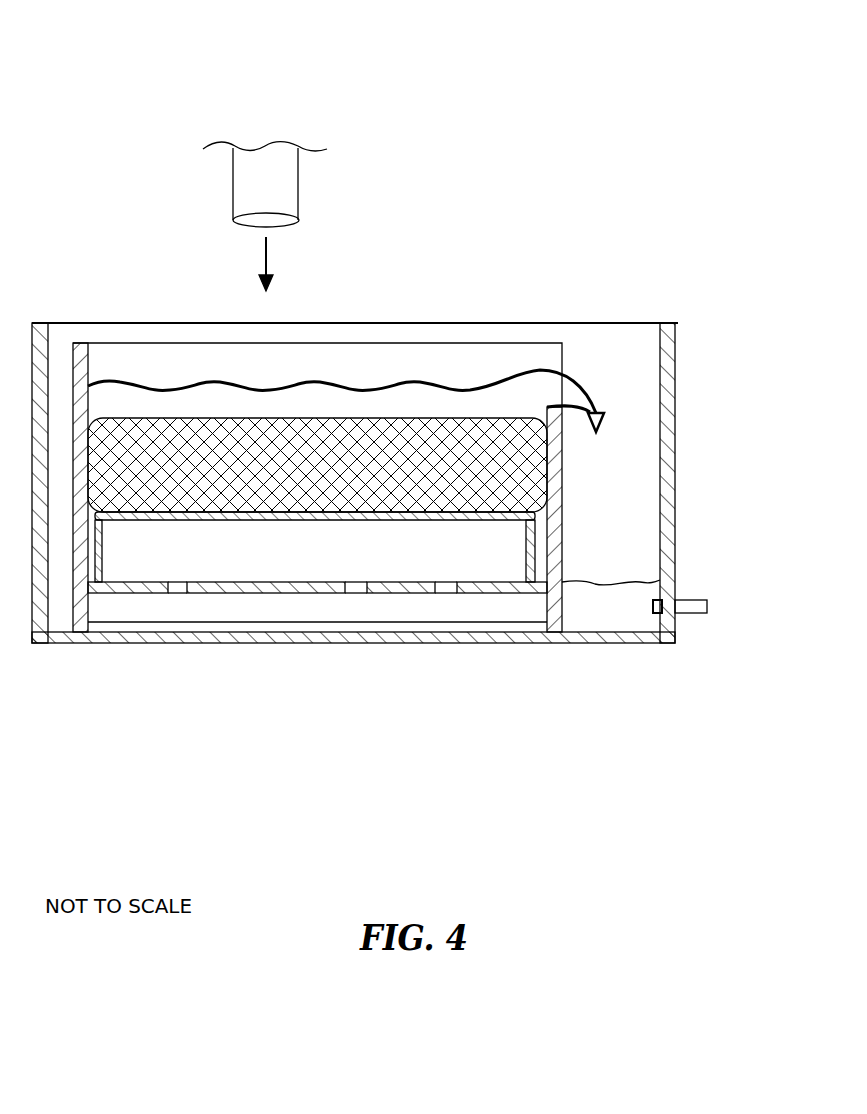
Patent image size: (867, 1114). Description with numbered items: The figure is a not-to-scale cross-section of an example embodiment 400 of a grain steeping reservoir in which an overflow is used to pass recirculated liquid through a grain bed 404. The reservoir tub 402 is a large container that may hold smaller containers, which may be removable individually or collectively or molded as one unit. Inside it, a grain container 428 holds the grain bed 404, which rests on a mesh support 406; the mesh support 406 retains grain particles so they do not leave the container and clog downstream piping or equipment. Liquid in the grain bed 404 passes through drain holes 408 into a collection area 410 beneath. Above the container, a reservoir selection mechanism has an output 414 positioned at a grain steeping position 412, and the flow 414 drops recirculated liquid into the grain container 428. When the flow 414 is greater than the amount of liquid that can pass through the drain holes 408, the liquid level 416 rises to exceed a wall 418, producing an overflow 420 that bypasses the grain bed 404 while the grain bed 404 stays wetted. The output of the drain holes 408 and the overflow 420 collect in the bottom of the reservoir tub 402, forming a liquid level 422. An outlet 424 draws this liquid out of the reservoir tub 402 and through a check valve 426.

The embodiment 400 is at (637, 806).
The reservoir tub 402 is at (366, 643).
The grain bed 404 is at (262, 418).
The mesh support 406 is at (125, 519).
The drain holes 408 is at (440, 594).
The collection area 410 is at (200, 622).
The grain steeping position 412 is at (263, 142).
The output of reservoir selection mechanism 414 is at (327, 151).
The liquid level 416 is at (443, 378).
The wall 418 is at (565, 430).
The overflow 420 is at (598, 408).
The liquid level 422 is at (585, 584).
The outlet 424 is at (707, 607).
The check valve 426 is at (693, 613).
The grain container 428 is at (73, 405).